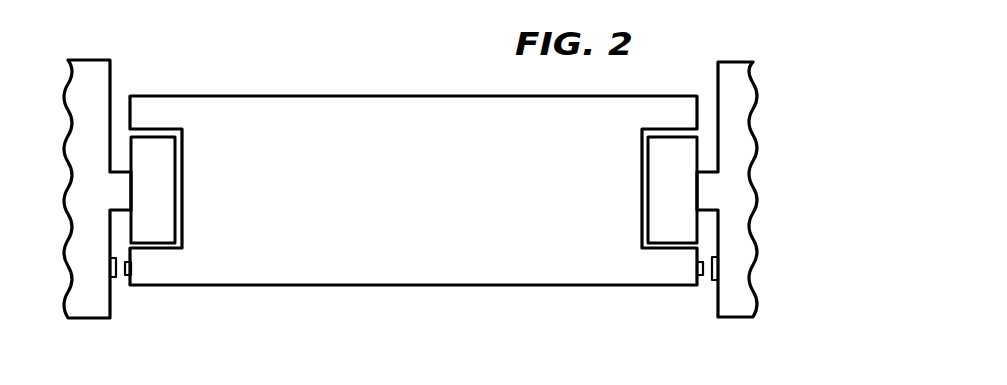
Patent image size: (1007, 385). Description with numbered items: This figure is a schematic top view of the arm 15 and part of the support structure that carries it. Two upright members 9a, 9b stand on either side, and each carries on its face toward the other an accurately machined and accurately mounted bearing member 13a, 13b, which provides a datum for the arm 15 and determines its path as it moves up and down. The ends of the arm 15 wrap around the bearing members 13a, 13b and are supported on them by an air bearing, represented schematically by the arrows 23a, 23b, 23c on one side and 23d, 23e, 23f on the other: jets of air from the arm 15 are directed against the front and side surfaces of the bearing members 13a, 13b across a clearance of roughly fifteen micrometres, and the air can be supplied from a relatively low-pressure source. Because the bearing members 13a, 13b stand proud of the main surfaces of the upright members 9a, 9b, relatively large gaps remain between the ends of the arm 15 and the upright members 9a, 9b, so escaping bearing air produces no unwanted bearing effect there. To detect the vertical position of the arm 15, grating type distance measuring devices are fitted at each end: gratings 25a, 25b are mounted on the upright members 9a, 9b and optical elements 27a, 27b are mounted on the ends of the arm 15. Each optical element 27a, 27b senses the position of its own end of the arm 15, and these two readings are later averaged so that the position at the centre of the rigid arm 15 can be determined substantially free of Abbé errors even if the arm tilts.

The arm 15 is at (442, 268).
The upright member 9a is at (90, 308).
The upright member 9b is at (733, 308).
The bearing member 13a is at (160, 164).
The bearing member 13b is at (672, 162).
The arrow 23a is at (158, 106).
The arrow 23b is at (182, 192).
The arrow 23c is at (160, 248).
The arrow 23d is at (670, 106).
The arrow 23e is at (642, 190).
The arrow 23f is at (670, 248).
The grating 25a is at (106, 271).
The grating 25b is at (720, 271).
The optical element 27a is at (125, 277).
The optical element 27b is at (705, 277).